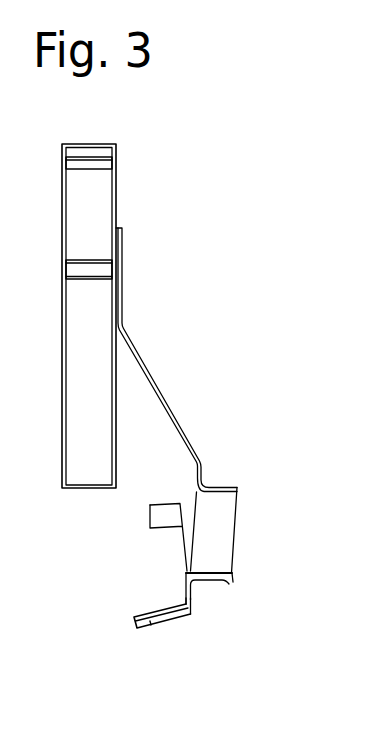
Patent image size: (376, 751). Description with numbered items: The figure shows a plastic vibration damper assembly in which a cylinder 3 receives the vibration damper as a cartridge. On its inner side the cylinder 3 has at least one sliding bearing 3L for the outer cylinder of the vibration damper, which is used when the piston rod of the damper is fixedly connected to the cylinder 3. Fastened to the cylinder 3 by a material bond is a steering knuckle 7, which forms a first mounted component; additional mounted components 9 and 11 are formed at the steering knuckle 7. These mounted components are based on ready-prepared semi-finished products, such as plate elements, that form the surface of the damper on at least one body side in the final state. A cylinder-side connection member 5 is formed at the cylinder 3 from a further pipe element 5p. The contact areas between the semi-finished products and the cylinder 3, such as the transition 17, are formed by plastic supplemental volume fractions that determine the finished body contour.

The cylinder 3 is at (130, 207).
The sliding bearing 3L is at (75, 262).
The steering knuckle 7 is at (143, 363).
The cylinder-side connection member 5 is at (235, 480).
The pipe element 5p is at (219, 585).
The mounted component 9 is at (160, 528).
The mounted component 11 is at (138, 631).
The transition 17 is at (191, 587).